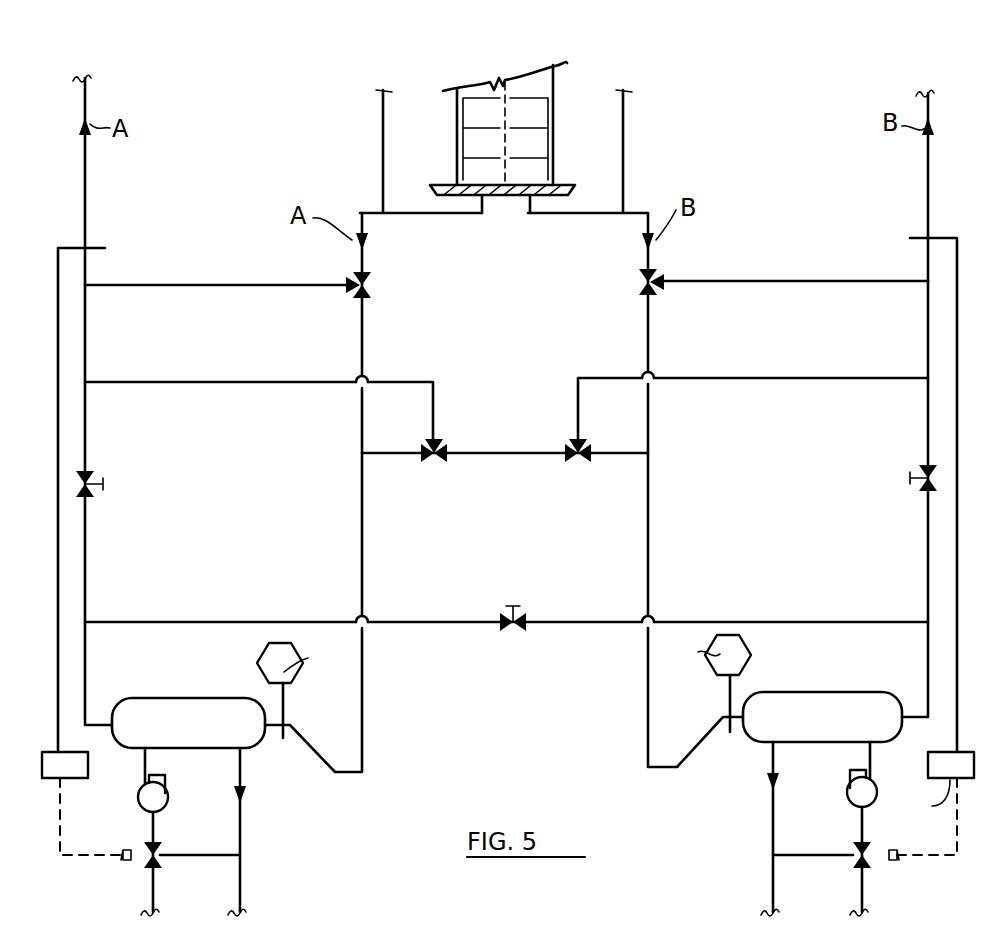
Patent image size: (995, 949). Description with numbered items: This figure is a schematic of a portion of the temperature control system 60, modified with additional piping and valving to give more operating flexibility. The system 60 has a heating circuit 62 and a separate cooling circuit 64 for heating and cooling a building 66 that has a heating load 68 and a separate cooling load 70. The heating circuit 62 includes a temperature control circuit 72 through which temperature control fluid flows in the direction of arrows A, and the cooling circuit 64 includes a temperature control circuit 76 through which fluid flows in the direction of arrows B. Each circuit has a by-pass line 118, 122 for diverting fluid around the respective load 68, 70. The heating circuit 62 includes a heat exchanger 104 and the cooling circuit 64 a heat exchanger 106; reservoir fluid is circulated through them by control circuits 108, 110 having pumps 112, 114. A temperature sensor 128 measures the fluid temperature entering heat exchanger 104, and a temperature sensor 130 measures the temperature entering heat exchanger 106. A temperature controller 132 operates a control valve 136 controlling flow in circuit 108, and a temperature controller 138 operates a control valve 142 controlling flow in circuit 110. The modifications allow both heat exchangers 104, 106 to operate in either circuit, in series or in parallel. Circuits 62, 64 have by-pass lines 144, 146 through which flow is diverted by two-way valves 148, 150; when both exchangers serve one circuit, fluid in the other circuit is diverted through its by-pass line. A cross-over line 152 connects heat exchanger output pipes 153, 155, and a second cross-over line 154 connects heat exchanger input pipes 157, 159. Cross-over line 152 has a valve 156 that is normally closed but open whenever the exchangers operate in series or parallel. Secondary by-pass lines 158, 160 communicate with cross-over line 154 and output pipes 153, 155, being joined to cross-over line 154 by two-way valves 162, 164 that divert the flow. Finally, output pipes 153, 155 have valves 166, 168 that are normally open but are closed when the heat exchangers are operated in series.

The temperature control system 60 is at (718, 62).
The heating circuit 62 is at (247, 186).
The cooling circuit 64 is at (757, 126).
The building 66 is at (553, 120).
The heating load 68 is at (466, 145).
The cooling load 70 is at (530, 143).
The temperature control circuit 72 is at (85, 204).
The temperature control circuit 76 is at (928, 180).
The heat exchanger 104 is at (172, 698).
The heat exchanger 106 is at (843, 692).
The control circuit 108 is at (240, 830).
The control circuit 110 is at (771, 808).
The pump 112 is at (176, 777).
The pump 114 is at (850, 784).
The by-pass line 118 is at (383, 152).
The by-pass line 122 is at (623, 152).
The temperature sensor 128 is at (258, 660).
The temperature sensor 130 is at (752, 656).
The temperature controller 132 is at (70, 762).
The control valve 136 is at (124, 860).
The temperature controller 138 is at (942, 775).
The control valve 142 is at (890, 860).
The by-pass line 144 is at (212, 284).
The by-pass line 146 is at (812, 280).
The two-way valve 148 is at (372, 286).
The two-way valve 150 is at (636, 282).
The cross-over line 152 is at (408, 625).
The heat exchanger output pipe 153 is at (88, 574).
The second cross-over line 154 is at (478, 452).
The heat exchanger output pipe 155 is at (926, 532).
The valve 156 is at (513, 606).
The heat exchanger input pipe 157 is at (360, 562).
The secondary by-pass line 158 is at (158, 382).
The heat exchanger input pipe 159 is at (650, 578).
The secondary by-pass line 160 is at (826, 377).
The two-way valve 162 is at (438, 462).
The two-way valve 164 is at (578, 462).
The valve 166 is at (103, 484).
The valve 168 is at (910, 478).